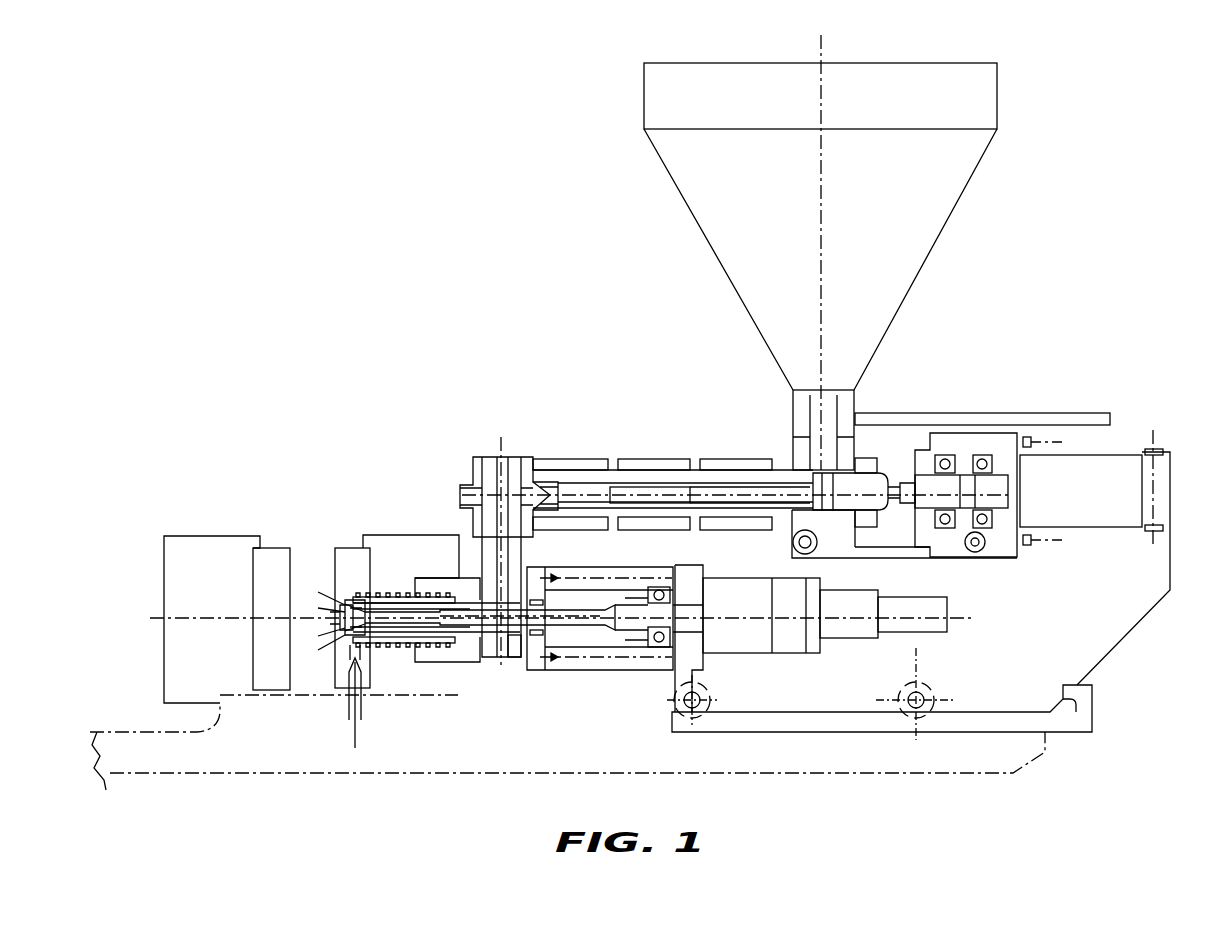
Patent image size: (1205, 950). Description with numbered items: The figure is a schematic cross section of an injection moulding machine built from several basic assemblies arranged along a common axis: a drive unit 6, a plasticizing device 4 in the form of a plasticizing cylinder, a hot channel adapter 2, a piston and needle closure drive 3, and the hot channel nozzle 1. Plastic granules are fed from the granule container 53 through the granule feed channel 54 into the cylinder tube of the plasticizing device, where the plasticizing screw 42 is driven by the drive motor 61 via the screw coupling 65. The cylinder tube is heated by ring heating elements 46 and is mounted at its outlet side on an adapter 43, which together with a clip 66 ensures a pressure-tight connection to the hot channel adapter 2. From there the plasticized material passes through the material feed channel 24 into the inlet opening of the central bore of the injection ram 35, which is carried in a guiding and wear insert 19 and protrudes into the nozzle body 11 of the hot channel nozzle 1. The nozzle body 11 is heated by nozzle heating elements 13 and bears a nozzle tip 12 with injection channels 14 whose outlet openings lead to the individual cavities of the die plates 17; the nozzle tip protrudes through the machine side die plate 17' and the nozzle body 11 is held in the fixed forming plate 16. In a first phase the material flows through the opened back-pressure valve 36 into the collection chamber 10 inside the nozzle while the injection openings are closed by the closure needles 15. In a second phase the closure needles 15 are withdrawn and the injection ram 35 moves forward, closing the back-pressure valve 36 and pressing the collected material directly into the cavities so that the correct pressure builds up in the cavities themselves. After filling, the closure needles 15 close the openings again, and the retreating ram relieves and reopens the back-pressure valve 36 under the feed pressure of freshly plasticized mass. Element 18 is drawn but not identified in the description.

The hot channel nozzle 1 is at (385, 545).
The hot channel adapter 2 is at (463, 528).
The piston and needle closure drive 3 is at (597, 681).
The plasticizing device 4 is at (627, 442).
The drive unit 6 is at (1072, 437).
The collection chamber 10 is at (370, 702).
The nozzle body 11 is at (475, 592).
The nozzle tip 12 is at (345, 600).
The nozzle heating elements 13 is at (418, 584).
The injection channels 14 is at (340, 655).
The closure needles 15 is at (547, 668).
The fixed forming plate 16 is at (428, 672).
The die plates 17 is at (217, 604).
The machine side die plate 17' is at (301, 597).
The rack teeth 18 is at (432, 665).
The guiding and wear insert 19 is at (395, 645).
The material feed channel 24 is at (484, 478).
The injection ram 35 is at (583, 618).
The back-pressure valve 36 is at (445, 668).
The plasticizing screw 42 is at (785, 492).
The adapter 43 is at (533, 482).
The ring heating elements 46 is at (585, 465).
The granule container 53 is at (879, 308).
The granule feed channel 54 is at (848, 415).
The drive motor 61 is at (1100, 468).
The screw coupling 65 is at (960, 470).
The clip 66 is at (473, 465).